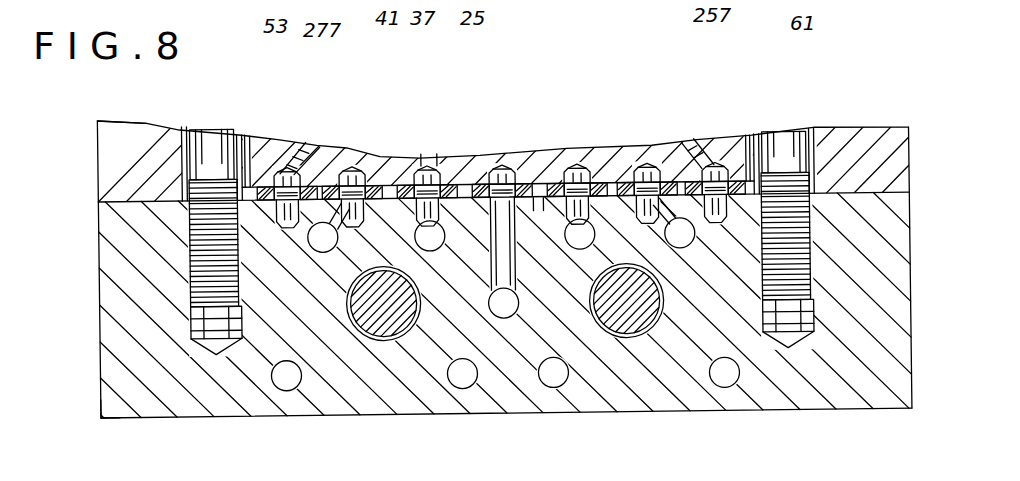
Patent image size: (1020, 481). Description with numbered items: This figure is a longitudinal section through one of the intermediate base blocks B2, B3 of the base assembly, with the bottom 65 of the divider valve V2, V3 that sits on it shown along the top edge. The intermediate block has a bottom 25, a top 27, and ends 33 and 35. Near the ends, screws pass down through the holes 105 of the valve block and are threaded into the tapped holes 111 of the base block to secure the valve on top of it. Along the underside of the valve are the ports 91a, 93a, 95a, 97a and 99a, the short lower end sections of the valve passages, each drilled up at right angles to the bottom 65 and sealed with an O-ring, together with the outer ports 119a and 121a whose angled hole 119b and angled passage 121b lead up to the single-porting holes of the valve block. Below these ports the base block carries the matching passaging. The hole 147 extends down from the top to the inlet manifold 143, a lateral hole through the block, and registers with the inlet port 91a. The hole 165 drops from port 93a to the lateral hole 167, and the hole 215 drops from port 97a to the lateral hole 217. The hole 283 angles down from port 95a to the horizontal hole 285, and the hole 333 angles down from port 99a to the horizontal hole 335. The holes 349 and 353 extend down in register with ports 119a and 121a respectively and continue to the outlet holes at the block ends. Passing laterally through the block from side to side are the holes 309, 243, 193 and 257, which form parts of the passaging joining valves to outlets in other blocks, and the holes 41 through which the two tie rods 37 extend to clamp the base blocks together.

The hole 105 is at (213, 147).
The tapped hole 111 is at (110, 278).
The hole 349 is at (249, 150).
The hole 353 is at (757, 168).
The port 119a is at (284, 172).
The angled hole 119b is at (314, 146).
The hole 283 is at (330, 225).
The port 95a is at (360, 171).
The horizontal hole 285 is at (338, 188).
The port 93a is at (418, 170).
The hole 165 is at (433, 150).
The hole 167 is at (453, 188).
The port 91a is at (491, 171).
The hole 147 is at (527, 283).
The inlet manifold 143 is at (498, 320).
The hole 217 is at (537, 188).
The hole 215 is at (544, 200).
The port 97a is at (575, 171).
The hole 333 is at (613, 190).
The horizontal hole 335 is at (655, 171).
The port 99a is at (672, 225).
The port 121a is at (723, 171).
The angled passage 121b is at (696, 152).
The tie rod 37 is at (357, 340).
The hole 41 is at (375, 342).
The hole 309 is at (283, 391).
The hole 243 is at (456, 386).
The hole 193 is at (557, 388).
The hole 257 is at (728, 394).
The top 27 is at (116, 191).
The bottom 65 is at (475, 305).
The end 33 is at (100, 346).
The end 35 is at (912, 334).
The bottom 25 is at (240, 417).
The divider valve V2 is at (83, 99).
The divider valve V3 is at (126, 116).
The intermediate block B2 is at (70, 389).
The intermediate block B3 is at (96, 394).